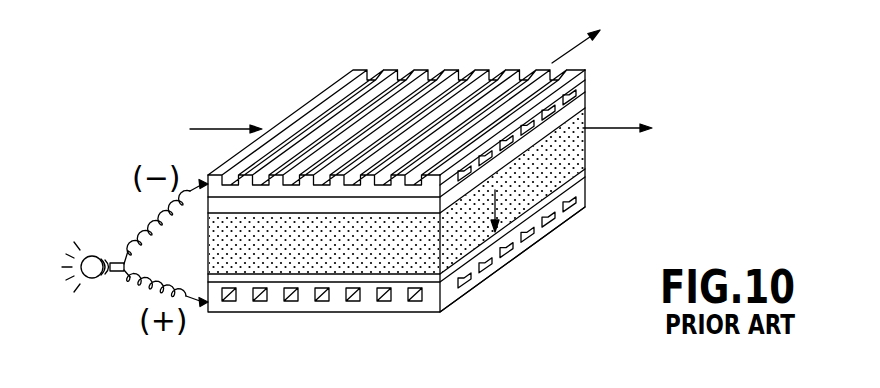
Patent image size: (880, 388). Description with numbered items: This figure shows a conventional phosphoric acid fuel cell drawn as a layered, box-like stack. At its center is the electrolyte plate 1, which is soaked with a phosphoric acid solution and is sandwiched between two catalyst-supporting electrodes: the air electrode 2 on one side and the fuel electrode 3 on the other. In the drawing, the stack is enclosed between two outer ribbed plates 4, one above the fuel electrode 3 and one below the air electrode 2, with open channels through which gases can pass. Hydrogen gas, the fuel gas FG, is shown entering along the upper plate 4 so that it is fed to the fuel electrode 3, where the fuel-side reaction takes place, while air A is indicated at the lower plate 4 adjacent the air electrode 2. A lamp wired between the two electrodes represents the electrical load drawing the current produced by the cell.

The electrolyte plate 1 is at (580, 145).
The air electrode 2 is at (585, 178).
The fuel electrode 3 is at (587, 100).
The separator plate with gas channels 4 is at (418, 72).
The air (oxidant gas) A is at (325, 300).
The fuel gas FG is at (209, 130).